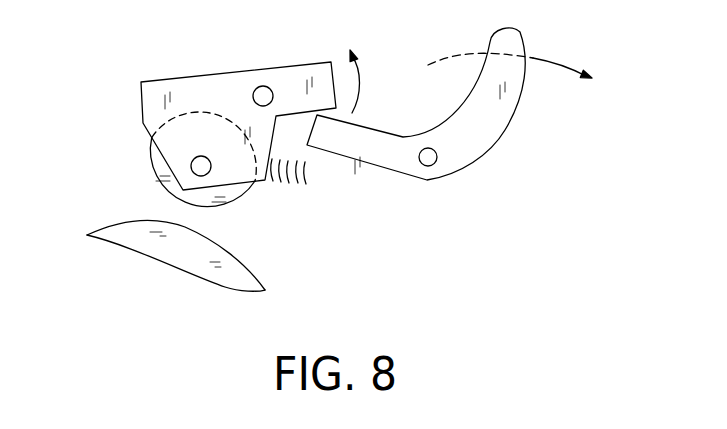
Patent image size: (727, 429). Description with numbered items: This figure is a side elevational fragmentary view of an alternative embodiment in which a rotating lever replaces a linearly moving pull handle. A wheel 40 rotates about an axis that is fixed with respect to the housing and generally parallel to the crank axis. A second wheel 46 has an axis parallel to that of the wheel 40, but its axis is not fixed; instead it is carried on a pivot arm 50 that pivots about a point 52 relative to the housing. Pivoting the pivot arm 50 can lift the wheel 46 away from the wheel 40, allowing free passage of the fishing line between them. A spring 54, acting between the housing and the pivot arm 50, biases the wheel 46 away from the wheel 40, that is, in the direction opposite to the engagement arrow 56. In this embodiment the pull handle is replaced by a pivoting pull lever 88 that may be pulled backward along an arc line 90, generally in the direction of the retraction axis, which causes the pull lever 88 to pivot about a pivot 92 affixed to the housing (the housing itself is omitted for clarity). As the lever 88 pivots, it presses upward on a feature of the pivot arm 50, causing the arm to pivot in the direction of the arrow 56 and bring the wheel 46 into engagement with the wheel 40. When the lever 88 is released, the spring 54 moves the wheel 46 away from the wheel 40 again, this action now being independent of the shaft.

The wheel 40 is at (130, 223).
The wheel 46 is at (141, 153).
The pivot arm 50 is at (200, 92).
The pivot point 52 is at (263, 86).
The spring 54 is at (283, 183).
The engagement arrow 56 is at (123, 27).
The pivoting pull lever 88 is at (499, 120).
The arc line 90 is at (553, 50).
The pivot 92 is at (430, 166).